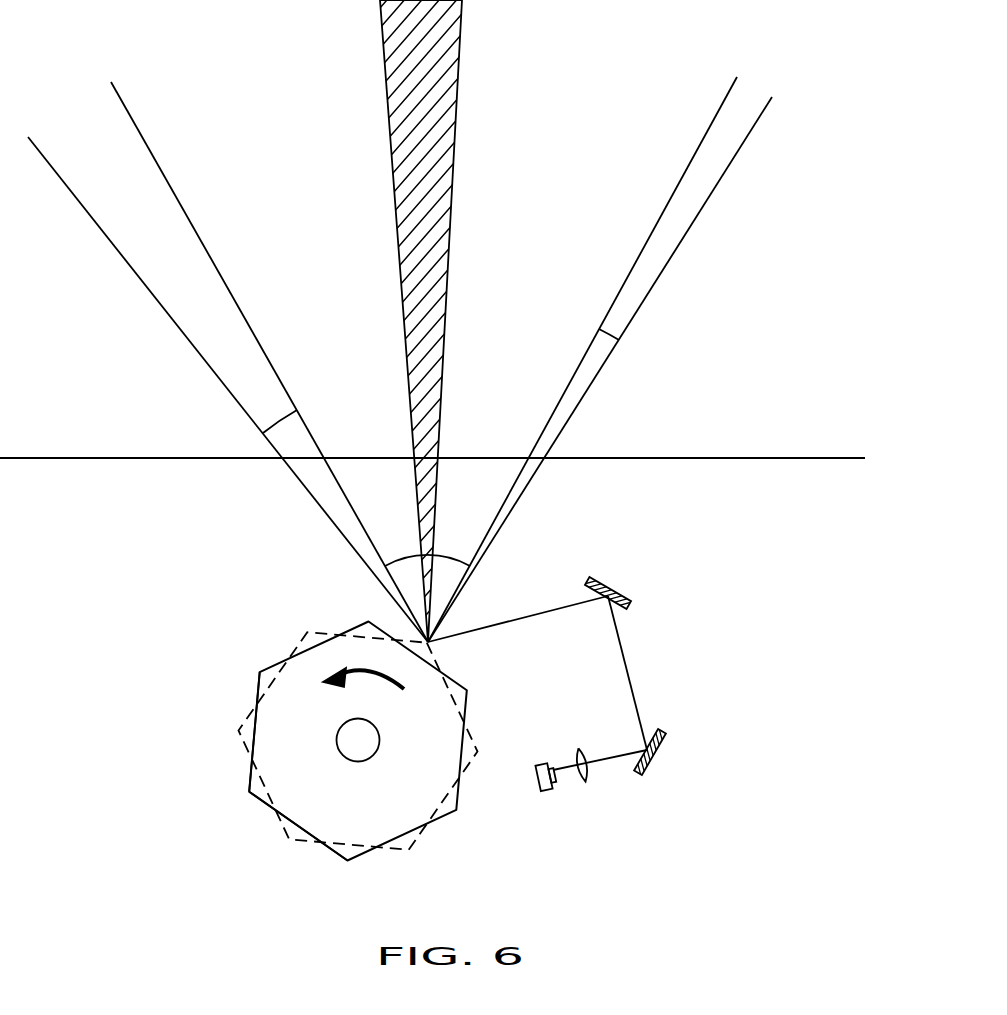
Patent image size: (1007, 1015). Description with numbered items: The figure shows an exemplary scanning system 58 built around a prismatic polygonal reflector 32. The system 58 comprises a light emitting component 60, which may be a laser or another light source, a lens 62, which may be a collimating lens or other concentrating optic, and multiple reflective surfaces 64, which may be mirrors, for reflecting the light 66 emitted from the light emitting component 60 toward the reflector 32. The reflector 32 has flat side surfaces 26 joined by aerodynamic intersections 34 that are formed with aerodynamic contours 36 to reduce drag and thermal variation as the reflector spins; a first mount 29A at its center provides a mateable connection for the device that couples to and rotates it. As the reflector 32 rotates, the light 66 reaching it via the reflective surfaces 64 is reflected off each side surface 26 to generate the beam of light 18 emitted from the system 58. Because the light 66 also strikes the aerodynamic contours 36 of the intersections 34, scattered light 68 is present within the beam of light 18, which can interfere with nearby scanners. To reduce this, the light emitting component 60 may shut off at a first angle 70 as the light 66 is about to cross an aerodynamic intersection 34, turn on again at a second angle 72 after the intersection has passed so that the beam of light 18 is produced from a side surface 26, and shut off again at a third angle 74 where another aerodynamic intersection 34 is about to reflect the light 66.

The beam of light 18 is at (257, 58).
The side surfaces 26 is at (367, 848).
The first mount 29A is at (372, 742).
The prismatic polygonal reflector 32 is at (322, 818).
The aerodynamic intersections 34 is at (252, 793).
The aerodynamic contours 36 is at (248, 789).
The system 58 is at (559, 728).
The light emitting component 60 is at (537, 786).
The lens 62 is at (588, 777).
The reflective surfaces 64 is at (617, 585).
The light 66 is at (521, 622).
The scattered light 68 is at (438, 132).
The first angle 70 is at (610, 334).
The second angle 72 is at (452, 554).
The third angle 74 is at (279, 421).